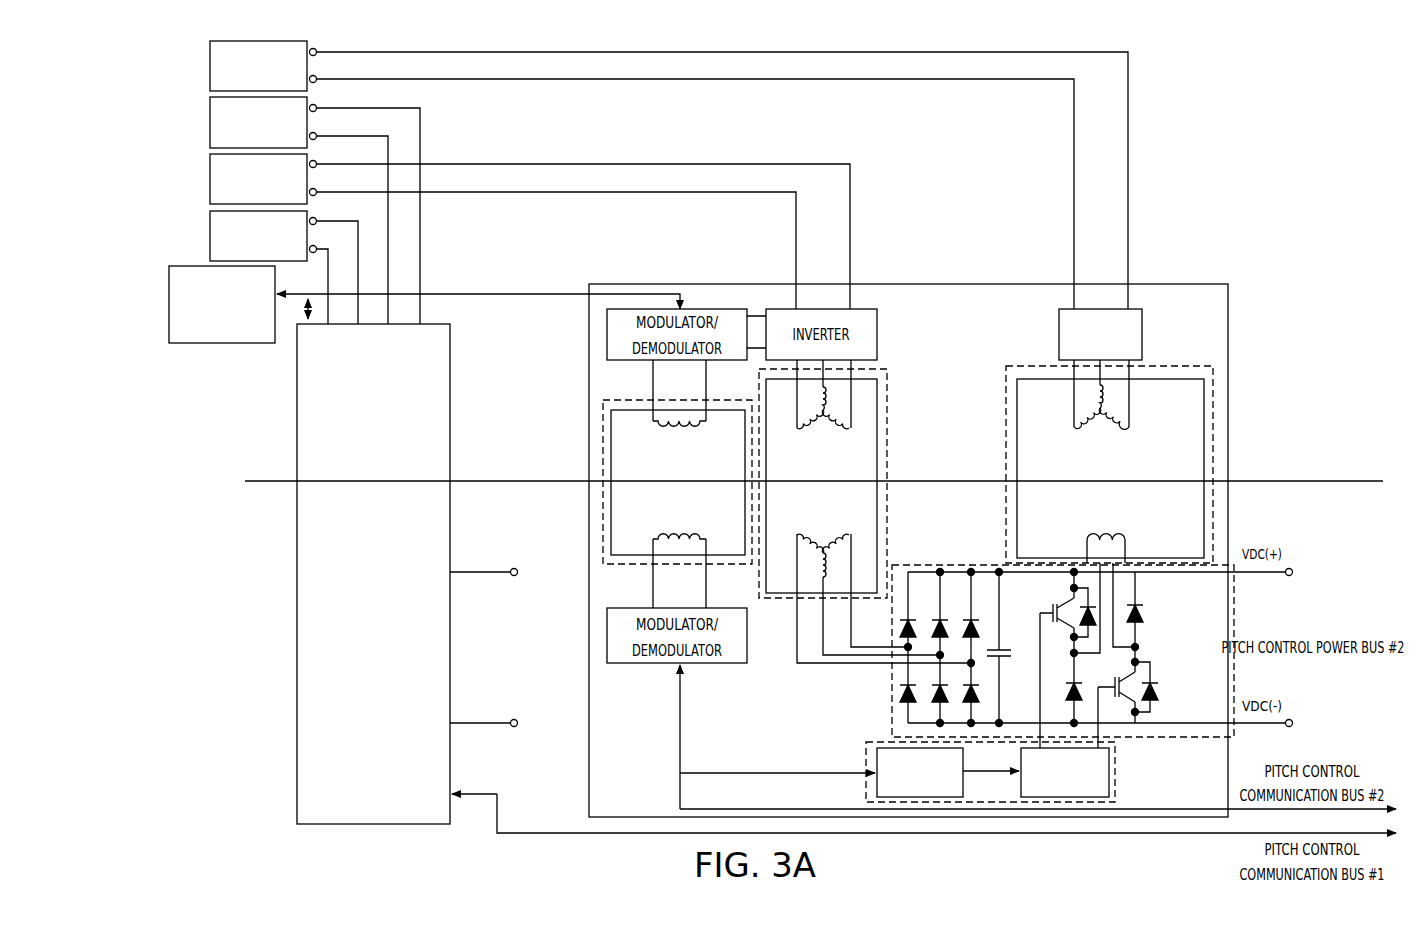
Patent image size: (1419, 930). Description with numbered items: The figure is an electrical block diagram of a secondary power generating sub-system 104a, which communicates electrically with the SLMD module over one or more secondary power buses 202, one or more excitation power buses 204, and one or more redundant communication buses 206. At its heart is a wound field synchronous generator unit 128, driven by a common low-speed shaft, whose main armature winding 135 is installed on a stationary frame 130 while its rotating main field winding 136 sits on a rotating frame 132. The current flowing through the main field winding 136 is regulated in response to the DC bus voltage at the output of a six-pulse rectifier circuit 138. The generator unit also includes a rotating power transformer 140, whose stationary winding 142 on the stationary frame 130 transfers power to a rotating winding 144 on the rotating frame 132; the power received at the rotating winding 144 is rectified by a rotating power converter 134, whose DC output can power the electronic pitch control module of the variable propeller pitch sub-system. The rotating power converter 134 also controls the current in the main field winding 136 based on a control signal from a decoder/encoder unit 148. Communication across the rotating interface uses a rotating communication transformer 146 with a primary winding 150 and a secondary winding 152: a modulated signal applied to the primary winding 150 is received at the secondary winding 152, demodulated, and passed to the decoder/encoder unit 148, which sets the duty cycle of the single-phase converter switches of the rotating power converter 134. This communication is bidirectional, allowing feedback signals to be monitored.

The secondary power generating sub-system 104a is at (1198, 213).
The wound field synchronous generator unit 128 is at (1221, 380).
The stationary frame 130 is at (1235, 292).
The rotating frame 132 is at (1224, 494).
The rotating power converter 134 is at (1155, 746).
The main armature winding 135 is at (1074, 403).
The main field winding 136 is at (1086, 553).
The six-pulse rectifier circuit 138 is at (1053, 349).
The rotating power transformer 140 is at (894, 434).
The stationary winding 142 is at (853, 398).
The rotating winding 144 is at (853, 555).
The rotating communication transformer 146 is at (598, 434).
The decoder/encoder unit 148 is at (861, 754).
The primary winding 150 is at (653, 418).
The secondary winding 152 is at (653, 541).
The secondary power bus 202 is at (210, 66).
The excitation power bus 204 is at (210, 179).
The redundant communication bus 206 is at (169, 303).